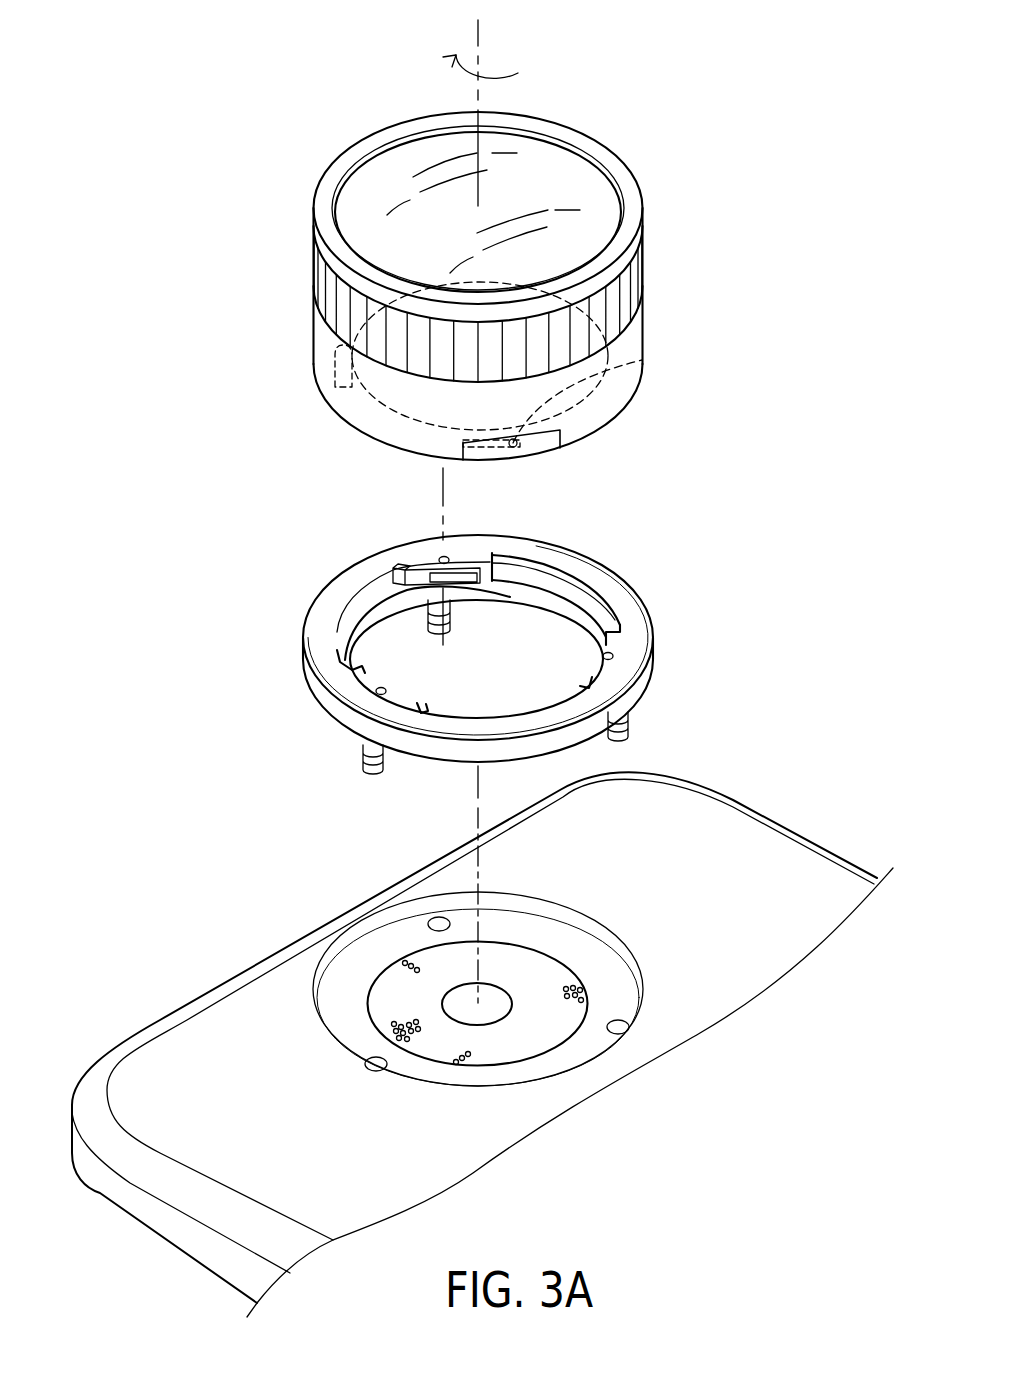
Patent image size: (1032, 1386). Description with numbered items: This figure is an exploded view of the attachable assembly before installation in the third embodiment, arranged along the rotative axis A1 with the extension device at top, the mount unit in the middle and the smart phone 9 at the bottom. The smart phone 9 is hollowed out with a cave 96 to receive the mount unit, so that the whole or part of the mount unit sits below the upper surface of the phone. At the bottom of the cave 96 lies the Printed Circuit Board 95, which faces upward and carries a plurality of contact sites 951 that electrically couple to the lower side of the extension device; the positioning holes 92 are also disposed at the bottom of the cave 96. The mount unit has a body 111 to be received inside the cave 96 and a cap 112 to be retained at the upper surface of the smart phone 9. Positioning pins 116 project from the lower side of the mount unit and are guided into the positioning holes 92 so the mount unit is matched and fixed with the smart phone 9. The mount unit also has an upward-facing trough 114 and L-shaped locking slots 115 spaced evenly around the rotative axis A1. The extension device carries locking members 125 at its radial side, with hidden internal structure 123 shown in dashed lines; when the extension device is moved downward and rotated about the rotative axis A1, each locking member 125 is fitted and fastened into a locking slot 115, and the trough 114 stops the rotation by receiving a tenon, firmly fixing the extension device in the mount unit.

The rotative axis A1 is at (478, 37).
The smart phone 9 is at (733, 827).
The positioning hole 92 is at (437, 917).
The Printed Circuit Board 95 is at (398, 997).
The contact site 951 is at (410, 960).
The cave 96 is at (604, 930).
The body 111 is at (535, 747).
The cap 112 is at (440, 730).
The trough 114 is at (440, 558).
The locking slot 115 is at (396, 592).
The positioning pin 116 is at (427, 628).
The engaging block 123 is at (640, 361).
The locking member 125 is at (500, 458).